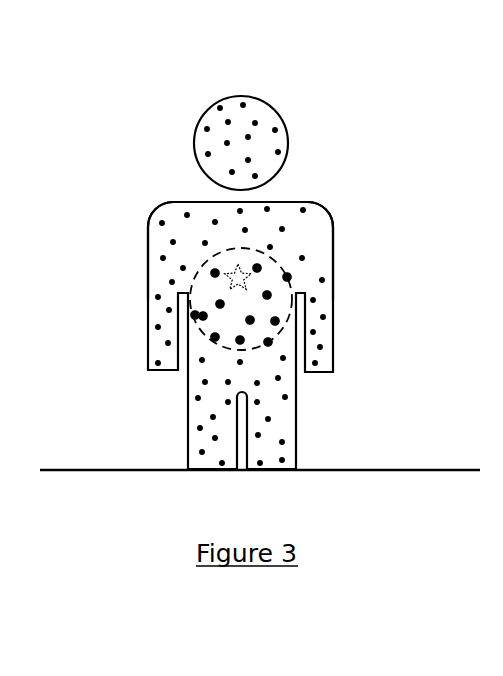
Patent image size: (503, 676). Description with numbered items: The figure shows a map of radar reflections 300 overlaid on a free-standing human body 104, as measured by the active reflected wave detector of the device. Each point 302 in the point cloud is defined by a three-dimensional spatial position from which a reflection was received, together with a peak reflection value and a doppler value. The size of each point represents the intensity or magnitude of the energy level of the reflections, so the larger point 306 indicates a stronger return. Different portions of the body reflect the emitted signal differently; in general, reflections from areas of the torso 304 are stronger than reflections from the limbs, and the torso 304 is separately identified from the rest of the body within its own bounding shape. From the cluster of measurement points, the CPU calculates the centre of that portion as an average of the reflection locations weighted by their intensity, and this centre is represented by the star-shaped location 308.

The subject body environment 300 is at (108, 89).
The human body 104 is at (160, 213).
The point 302 is at (316, 243).
The torso 304 is at (196, 275).
The larger point 306 is at (213, 337).
The location 308 is at (246, 286).